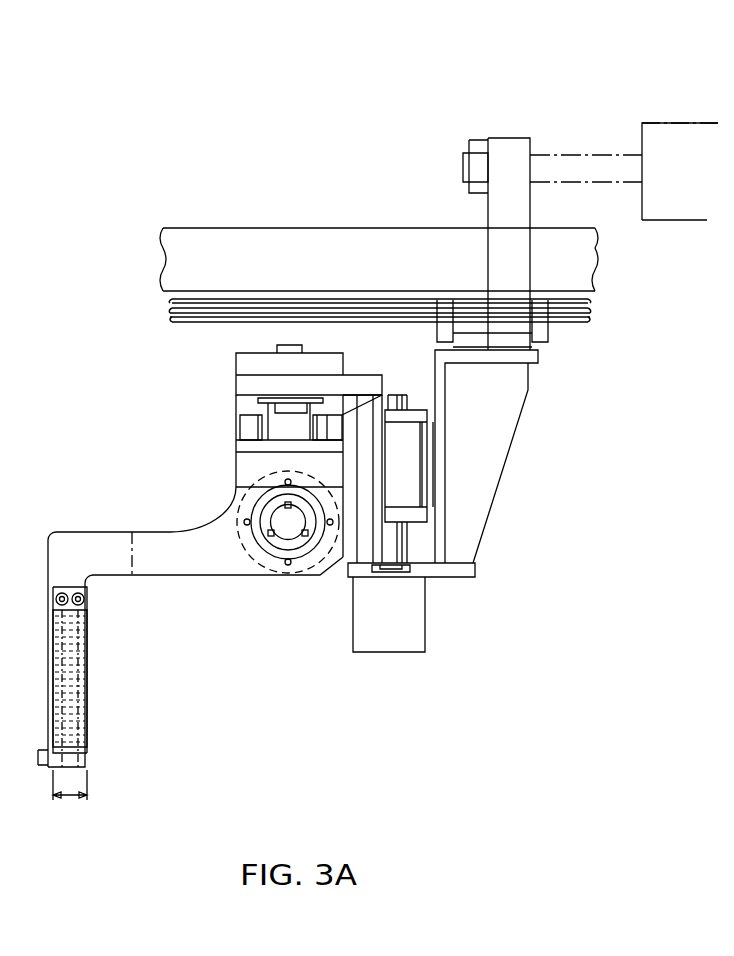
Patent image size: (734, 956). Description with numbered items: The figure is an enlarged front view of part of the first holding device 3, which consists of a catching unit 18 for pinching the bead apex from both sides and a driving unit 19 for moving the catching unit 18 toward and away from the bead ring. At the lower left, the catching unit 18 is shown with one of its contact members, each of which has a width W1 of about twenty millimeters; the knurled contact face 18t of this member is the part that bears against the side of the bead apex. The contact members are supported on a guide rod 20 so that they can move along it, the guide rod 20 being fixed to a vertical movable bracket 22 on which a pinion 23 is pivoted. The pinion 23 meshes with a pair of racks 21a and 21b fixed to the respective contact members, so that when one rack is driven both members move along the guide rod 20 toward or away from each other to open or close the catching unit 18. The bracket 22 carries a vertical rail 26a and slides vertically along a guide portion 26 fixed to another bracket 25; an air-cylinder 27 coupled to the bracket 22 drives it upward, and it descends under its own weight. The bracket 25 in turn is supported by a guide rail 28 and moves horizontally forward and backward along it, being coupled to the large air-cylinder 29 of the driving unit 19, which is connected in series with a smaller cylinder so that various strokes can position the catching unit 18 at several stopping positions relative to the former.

The first holding device 3 is at (282, 670).
The catching unit 18 is at (92, 648).
The gripping pad 18t is at (87, 700).
The driving unit 19 is at (692, 222).
The guide rod 20 is at (283, 530).
The rack 21a is at (253, 432).
The rack 21b is at (327, 430).
The vertical movable bracket 22 is at (248, 385).
The pinion 23 is at (290, 430).
The bracket 25 is at (457, 568).
The guide portion 26 is at (407, 462).
The vertical rail 26a is at (400, 533).
The air-cylinder 27 is at (415, 632).
The guide rail 28 is at (590, 324).
The large air-cylinder 29 is at (653, 221).
The width of contact member W1 is at (70, 797).